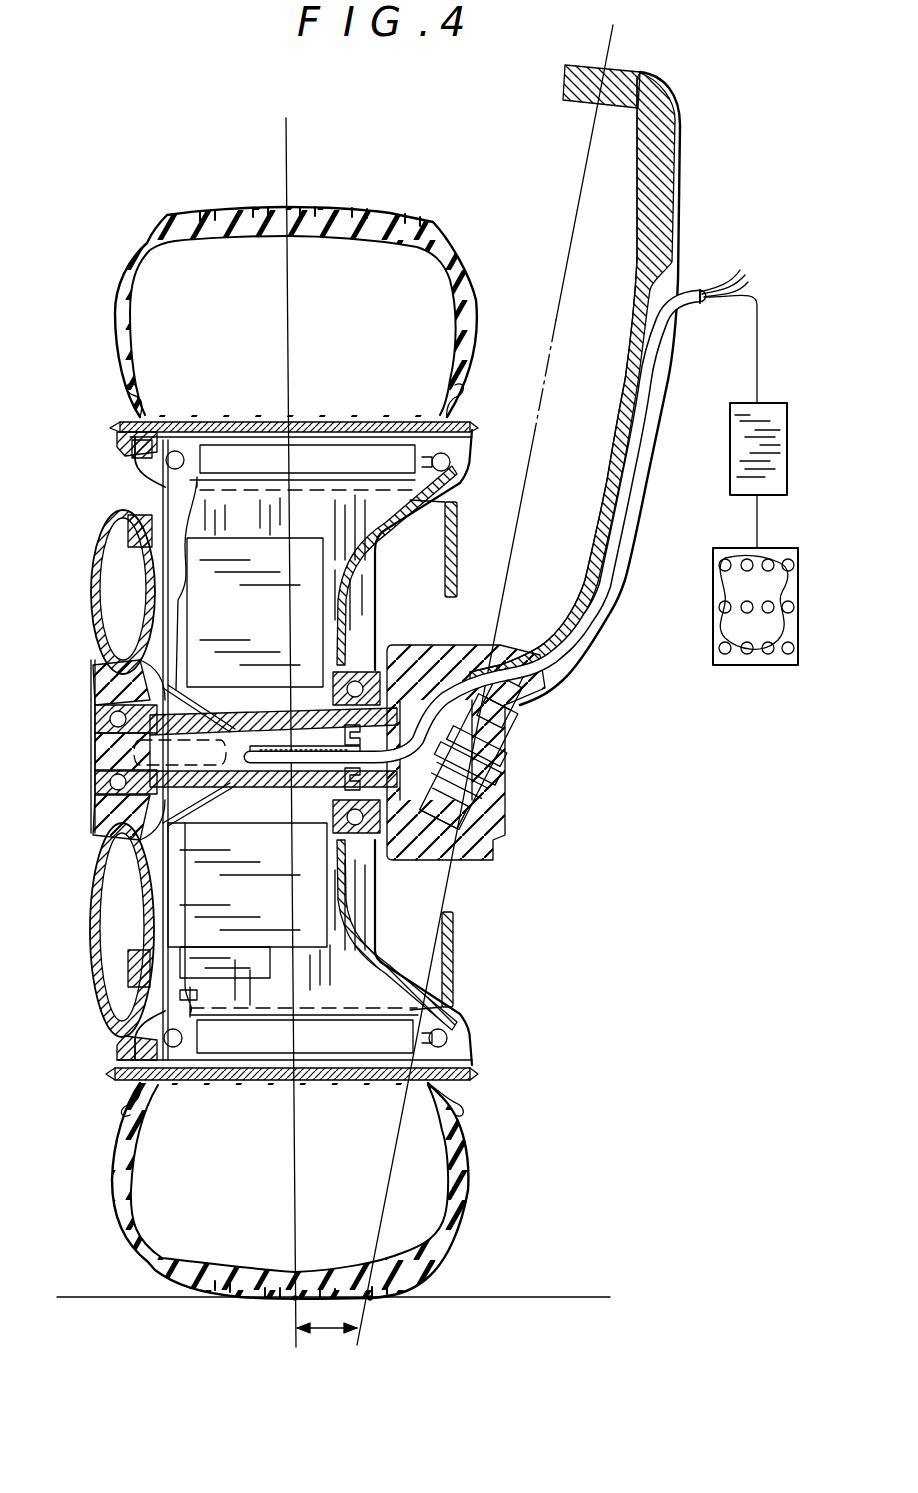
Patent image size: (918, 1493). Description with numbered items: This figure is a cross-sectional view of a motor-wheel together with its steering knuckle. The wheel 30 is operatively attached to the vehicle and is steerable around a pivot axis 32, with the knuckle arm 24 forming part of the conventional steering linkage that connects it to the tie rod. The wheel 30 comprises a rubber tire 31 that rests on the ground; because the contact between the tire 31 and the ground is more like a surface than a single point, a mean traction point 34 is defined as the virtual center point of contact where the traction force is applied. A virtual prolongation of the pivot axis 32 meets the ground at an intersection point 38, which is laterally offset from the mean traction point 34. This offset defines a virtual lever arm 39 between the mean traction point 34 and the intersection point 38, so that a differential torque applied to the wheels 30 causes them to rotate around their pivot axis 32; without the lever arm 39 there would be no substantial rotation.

The knuckle arm 24 is at (607, 587).
The wheel 30 is at (341, 196).
The rubber tire 31 is at (470, 1192).
The pivot axis 32 is at (586, 160).
The mean traction point 34 is at (292, 1300).
The intersection point 38 is at (372, 1300).
The virtual lever arm 39 is at (331, 1332).